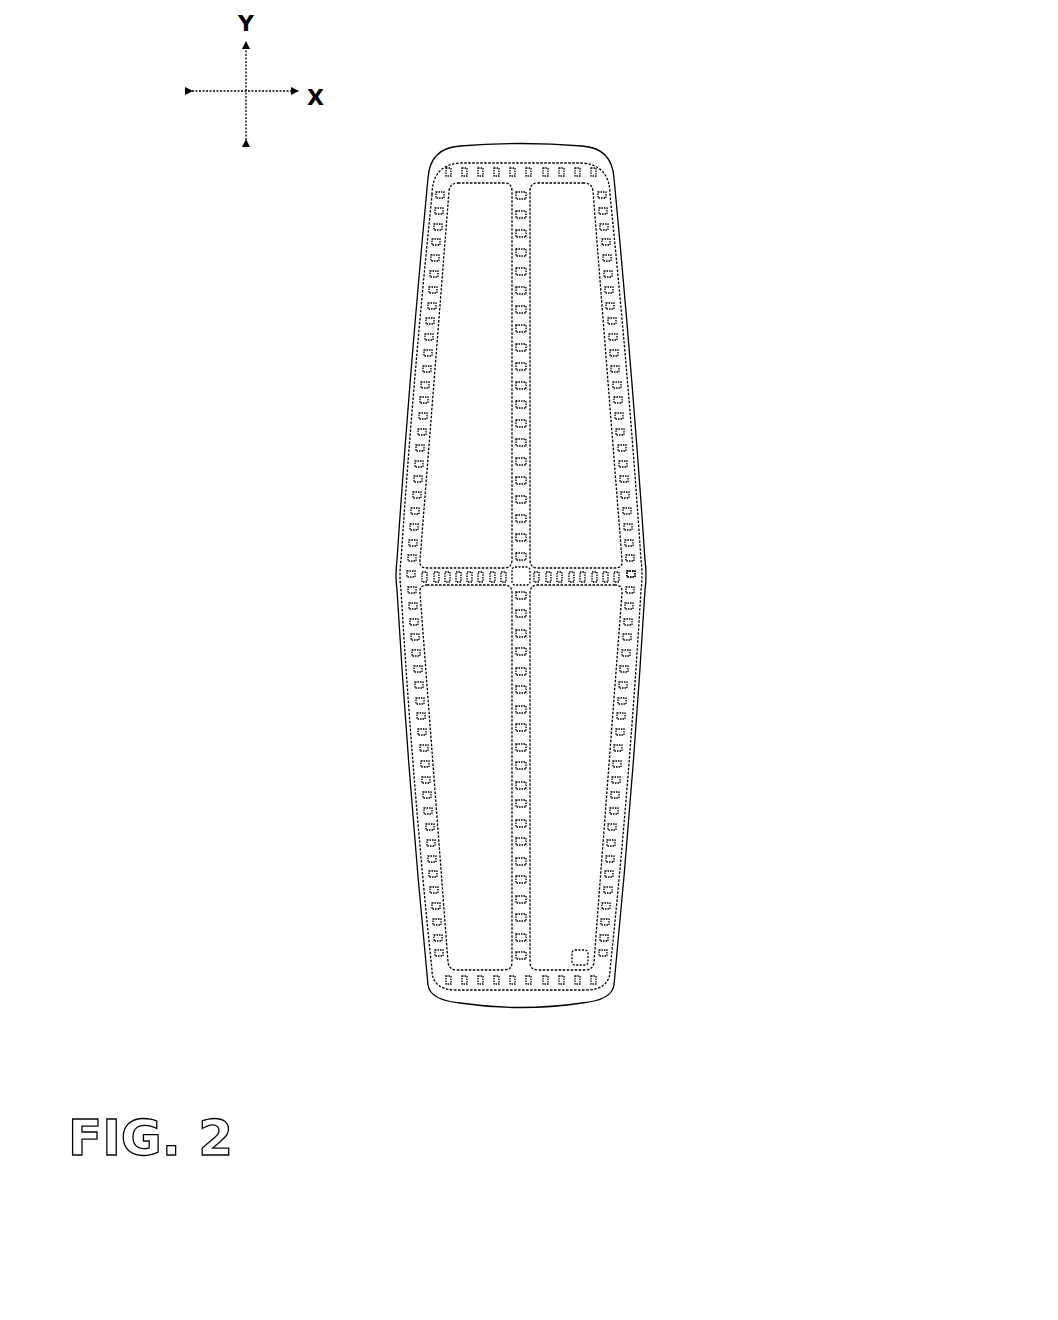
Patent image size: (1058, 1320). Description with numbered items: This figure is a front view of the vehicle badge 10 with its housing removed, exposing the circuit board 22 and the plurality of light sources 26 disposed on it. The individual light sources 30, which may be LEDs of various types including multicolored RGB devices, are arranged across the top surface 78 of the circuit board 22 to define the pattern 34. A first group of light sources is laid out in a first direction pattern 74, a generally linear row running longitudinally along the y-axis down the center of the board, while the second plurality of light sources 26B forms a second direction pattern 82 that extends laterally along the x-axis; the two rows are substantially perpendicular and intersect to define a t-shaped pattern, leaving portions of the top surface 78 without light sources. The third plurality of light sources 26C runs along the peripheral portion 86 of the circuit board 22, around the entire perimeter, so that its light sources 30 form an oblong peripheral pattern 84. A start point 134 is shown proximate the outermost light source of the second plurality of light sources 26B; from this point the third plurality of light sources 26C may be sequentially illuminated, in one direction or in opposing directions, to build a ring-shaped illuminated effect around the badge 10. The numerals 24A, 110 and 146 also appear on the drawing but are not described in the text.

The vehicle badge 10 is at (690, 132).
The circuit board 22 is at (588, 995).
The central rib 24A is at (505, 396).
The plurality of light sources 26 is at (628, 289).
The second plurality of light sources 26B is at (455, 592).
The third plurality of light sources 26C is at (396, 558).
The light source 30 is at (615, 822).
The pattern 34 is at (649, 447).
The first direction pattern 74 is at (534, 212).
The top surface 78 is at (568, 888).
The second direction pattern 82 is at (601, 561).
The peripheral pattern 84 is at (405, 829).
The peripheral portion 86 is at (430, 230).
The central hub 110 is at (542, 556).
The start point 134 is at (630, 582).
The cross rib 146 is at (406, 569).